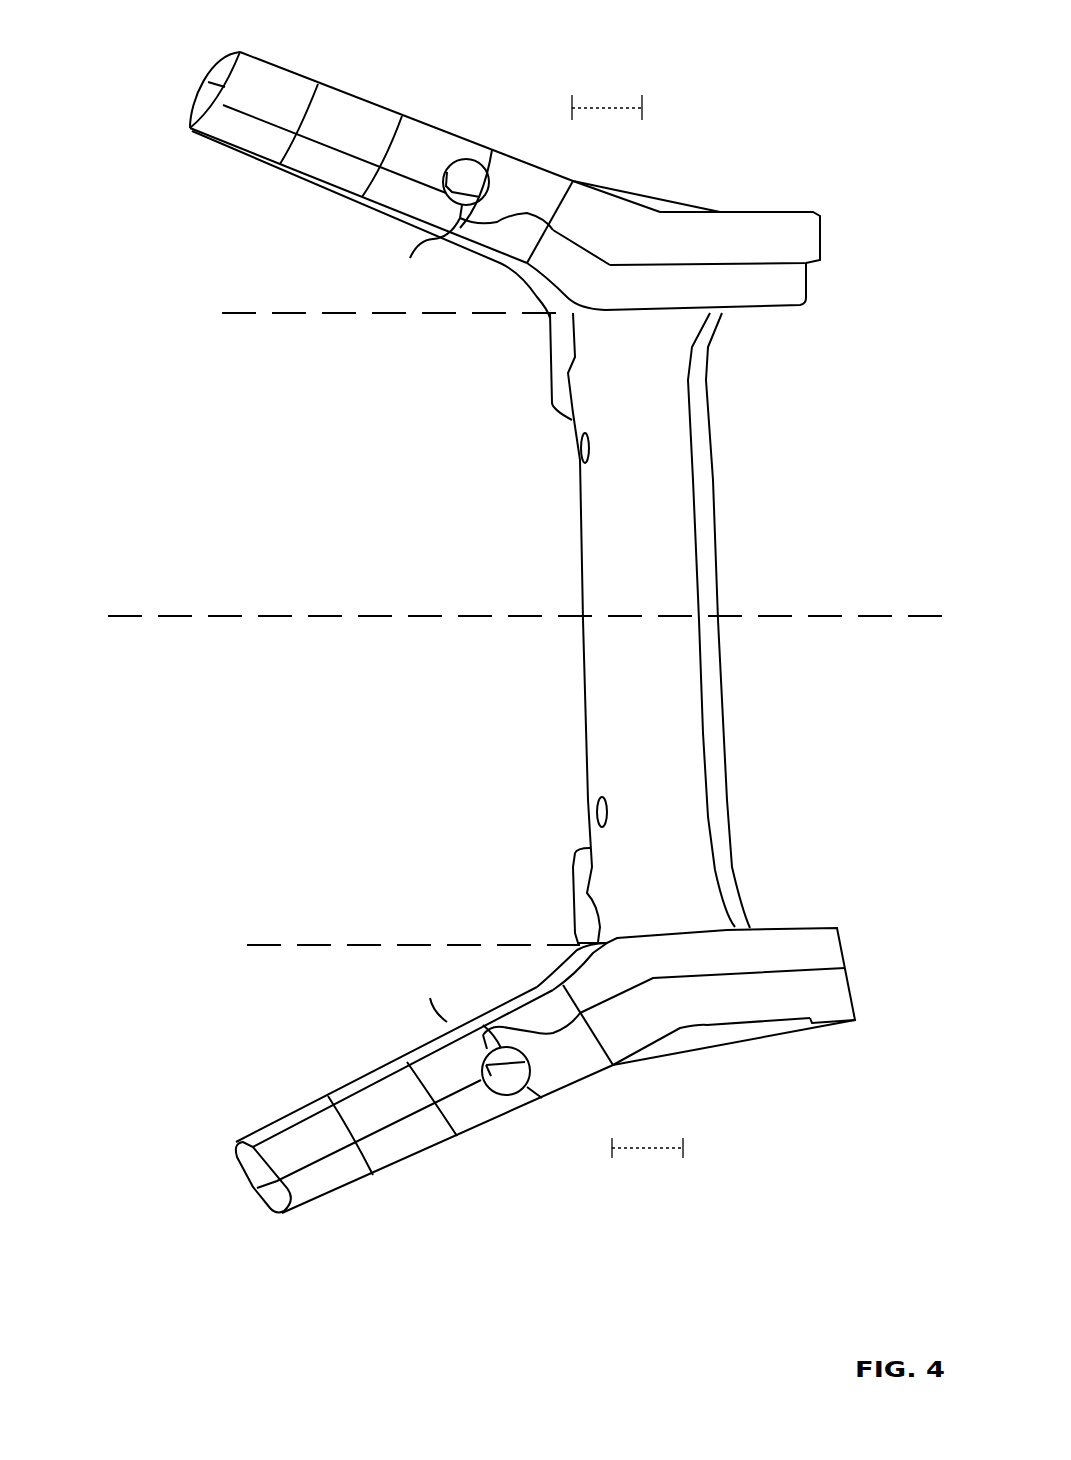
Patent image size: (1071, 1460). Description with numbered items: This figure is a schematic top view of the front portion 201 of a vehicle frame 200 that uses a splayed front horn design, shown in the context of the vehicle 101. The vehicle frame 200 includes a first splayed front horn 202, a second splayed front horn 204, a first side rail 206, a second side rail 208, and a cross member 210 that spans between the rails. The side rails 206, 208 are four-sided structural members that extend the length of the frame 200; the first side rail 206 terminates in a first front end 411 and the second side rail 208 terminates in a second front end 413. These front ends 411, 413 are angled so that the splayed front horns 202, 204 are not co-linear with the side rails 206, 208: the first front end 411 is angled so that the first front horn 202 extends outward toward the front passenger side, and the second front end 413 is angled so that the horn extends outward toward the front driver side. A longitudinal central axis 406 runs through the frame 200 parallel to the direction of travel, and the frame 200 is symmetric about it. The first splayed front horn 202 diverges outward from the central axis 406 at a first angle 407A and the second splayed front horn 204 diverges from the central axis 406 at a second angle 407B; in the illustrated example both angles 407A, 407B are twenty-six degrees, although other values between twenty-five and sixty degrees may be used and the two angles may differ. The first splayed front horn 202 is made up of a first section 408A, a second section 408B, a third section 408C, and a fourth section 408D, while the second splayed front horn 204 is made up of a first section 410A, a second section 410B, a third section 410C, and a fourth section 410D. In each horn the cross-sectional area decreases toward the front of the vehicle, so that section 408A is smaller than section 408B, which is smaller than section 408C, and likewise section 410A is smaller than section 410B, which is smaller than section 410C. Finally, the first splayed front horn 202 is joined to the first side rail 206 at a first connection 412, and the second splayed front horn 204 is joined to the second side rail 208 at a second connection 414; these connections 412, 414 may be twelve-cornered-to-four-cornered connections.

The vehicle 101 is at (120, 390).
The vehicle frame 200 is at (725, 597).
The front portion 201 is at (822, 243).
The first splayed front horn 202 is at (200, 90).
The second splayed front horn 204 is at (283, 1214).
The first side rail 206 is at (773, 210).
The second side rail 208 is at (830, 1028).
The cross member 210 is at (713, 502).
The central axis 406 is at (327, 615).
The first angle 407A is at (413, 307).
The second angle 407B is at (440, 953).
The first section 408A is at (283, 63).
The second section 408B is at (390, 107).
The third section 408C is at (485, 137).
The fourth section 408D is at (563, 174).
The first section 410A is at (335, 1192).
The second section 410B is at (408, 1160).
The third section 410C is at (483, 1126).
The fourth section 410D is at (565, 1089).
The first front end 411 is at (613, 108).
The first connection 412 is at (574, 180).
The second front end 413 is at (653, 1148).
The second connection 414 is at (613, 1065).